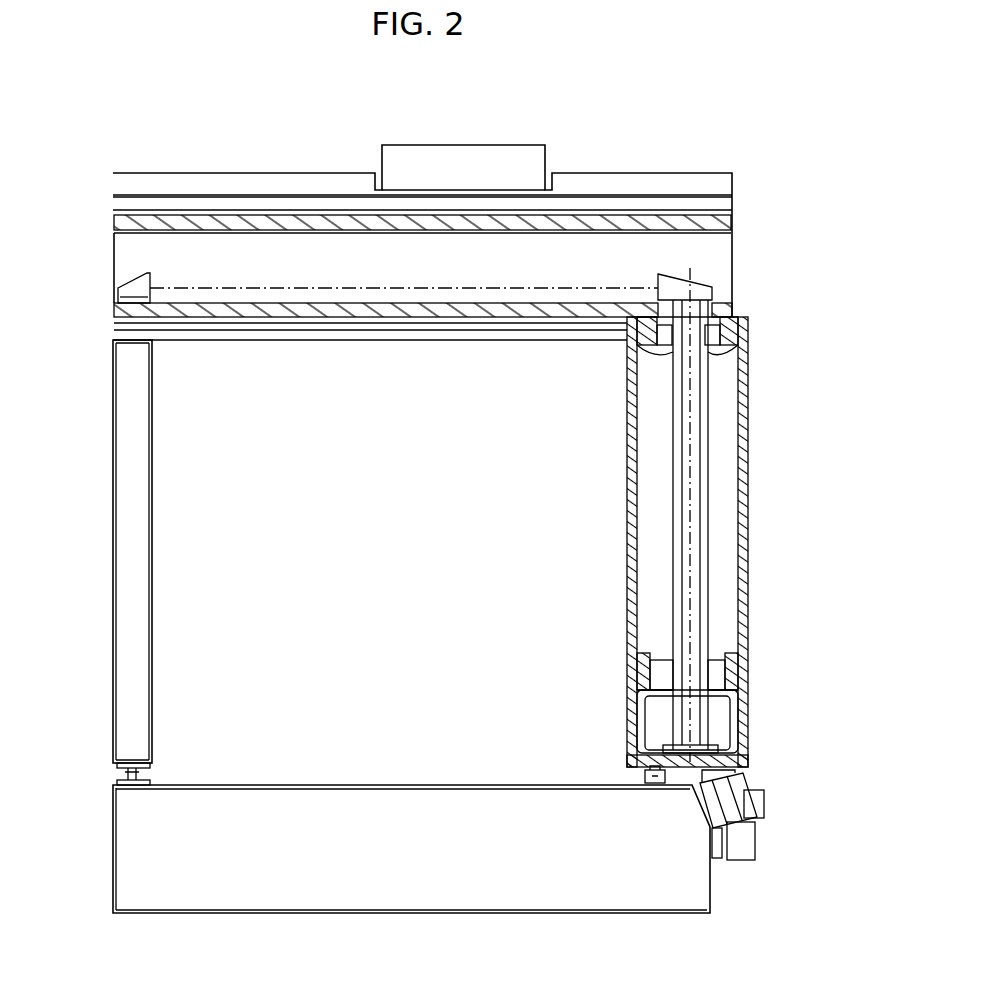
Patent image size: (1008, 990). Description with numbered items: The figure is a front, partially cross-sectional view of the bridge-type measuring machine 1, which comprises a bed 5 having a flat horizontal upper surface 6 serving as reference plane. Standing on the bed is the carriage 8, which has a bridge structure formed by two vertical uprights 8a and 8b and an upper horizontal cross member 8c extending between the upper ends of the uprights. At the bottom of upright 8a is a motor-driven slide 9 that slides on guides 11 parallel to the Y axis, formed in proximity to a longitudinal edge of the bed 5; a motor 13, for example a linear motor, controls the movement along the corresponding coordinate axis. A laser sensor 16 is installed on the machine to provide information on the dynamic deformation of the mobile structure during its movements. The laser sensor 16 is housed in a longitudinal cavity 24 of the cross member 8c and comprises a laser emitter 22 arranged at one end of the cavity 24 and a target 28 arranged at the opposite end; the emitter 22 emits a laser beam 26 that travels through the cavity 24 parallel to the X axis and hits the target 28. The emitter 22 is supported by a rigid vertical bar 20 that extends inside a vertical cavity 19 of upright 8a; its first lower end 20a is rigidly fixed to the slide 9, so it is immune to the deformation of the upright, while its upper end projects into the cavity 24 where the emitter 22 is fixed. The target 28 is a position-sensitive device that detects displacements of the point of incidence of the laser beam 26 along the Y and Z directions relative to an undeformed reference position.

The bridge-type measuring machine 1 is at (155, 157).
The bed 5 is at (383, 796).
The flat horizontal upper surface 6 is at (304, 782).
The carriage 8 is at (476, 453).
The vertical upright 8a is at (733, 527).
The vertical upright 8b is at (154, 549).
The upper horizontal cross member 8c is at (613, 191).
The motor-driven slide 9 is at (736, 762).
The guides 11 is at (652, 777).
The motor 13 is at (718, 798).
The laser sensor 16 is at (640, 258).
The vertical cavity 19 is at (736, 526).
The vertical bar 20 is at (690, 466).
The first lower end 20a is at (702, 746).
The laser emitter 22 is at (690, 288).
The longitudinal cavity 24 is at (263, 234).
The laser beam 26 is at (338, 280).
The target 28 is at (146, 290).